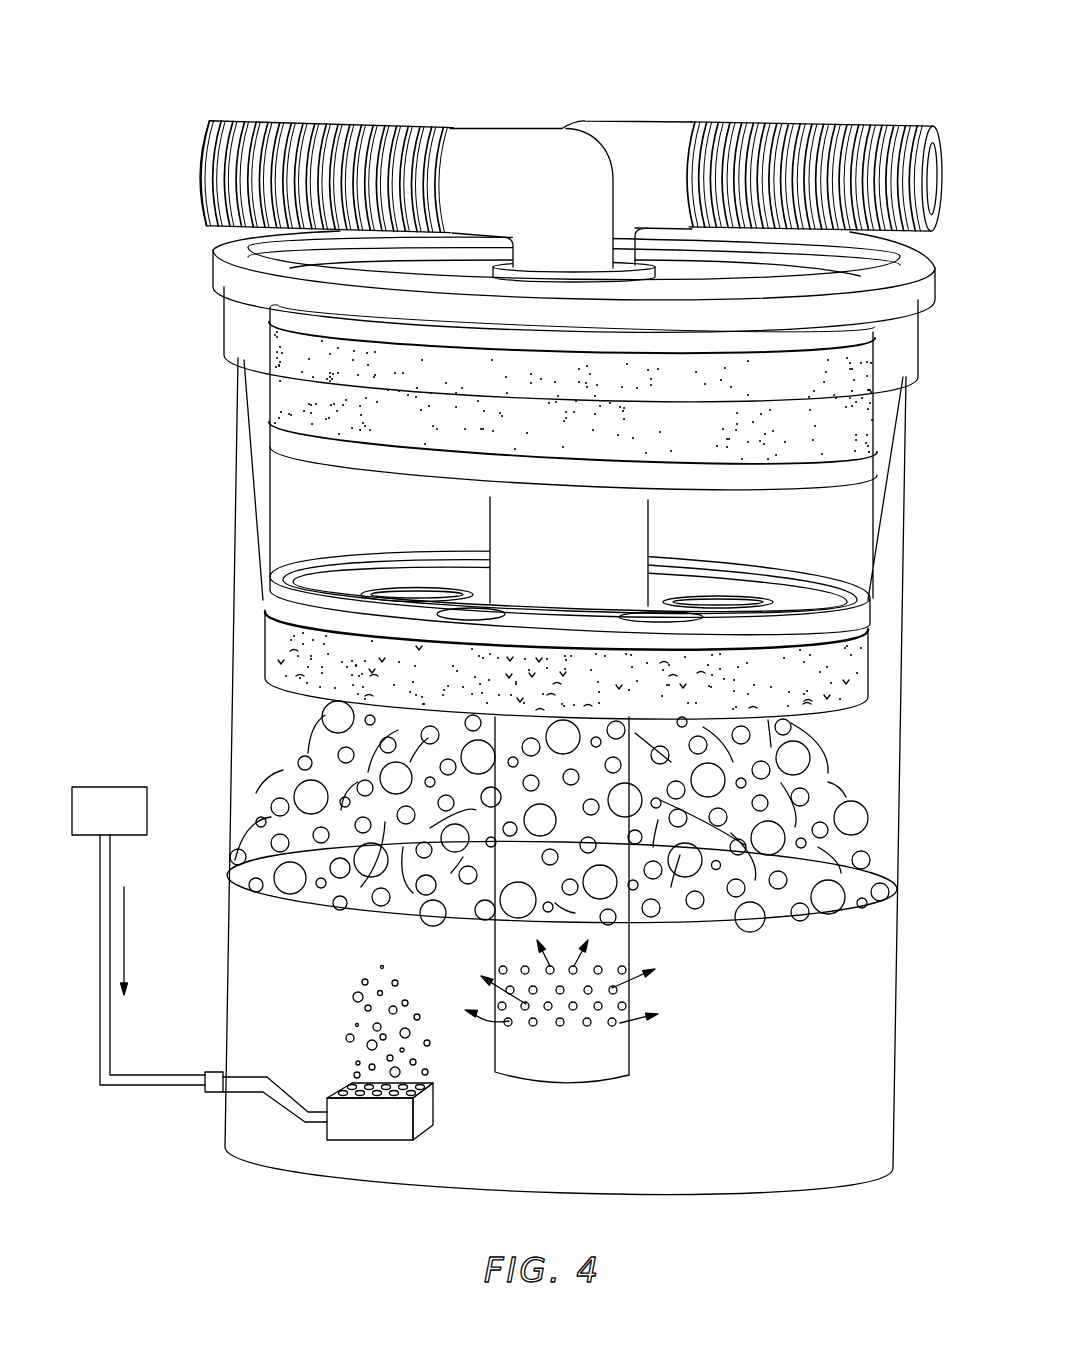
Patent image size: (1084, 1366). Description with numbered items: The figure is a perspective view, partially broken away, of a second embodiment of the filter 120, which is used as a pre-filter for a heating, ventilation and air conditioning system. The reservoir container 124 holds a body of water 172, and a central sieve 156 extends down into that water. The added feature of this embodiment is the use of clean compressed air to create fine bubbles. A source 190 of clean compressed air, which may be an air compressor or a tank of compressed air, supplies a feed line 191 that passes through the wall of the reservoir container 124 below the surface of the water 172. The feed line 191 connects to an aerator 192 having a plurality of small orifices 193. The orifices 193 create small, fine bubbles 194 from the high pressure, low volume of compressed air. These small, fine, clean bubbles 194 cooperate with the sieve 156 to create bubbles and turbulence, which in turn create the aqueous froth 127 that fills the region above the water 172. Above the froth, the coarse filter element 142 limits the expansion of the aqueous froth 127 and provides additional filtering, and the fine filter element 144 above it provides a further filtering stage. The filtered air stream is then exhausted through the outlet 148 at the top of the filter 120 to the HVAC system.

The filter 120 is at (636, 42).
The outlet 148 is at (647, 128).
The reservoir container 124 is at (235, 547).
The fine filter element 144 is at (307, 410).
The coarse filter element 142 is at (287, 647).
The aqueous froth 127 is at (296, 788).
The sieve 156 is at (637, 1004).
The water 172 is at (857, 989).
The source of clean compressed air 190 is at (126, 828).
The feed line 191 is at (242, 1083).
The aerator 192 is at (383, 1133).
The orifices 193 is at (343, 1085).
The fine bubbles 194 is at (357, 1025).